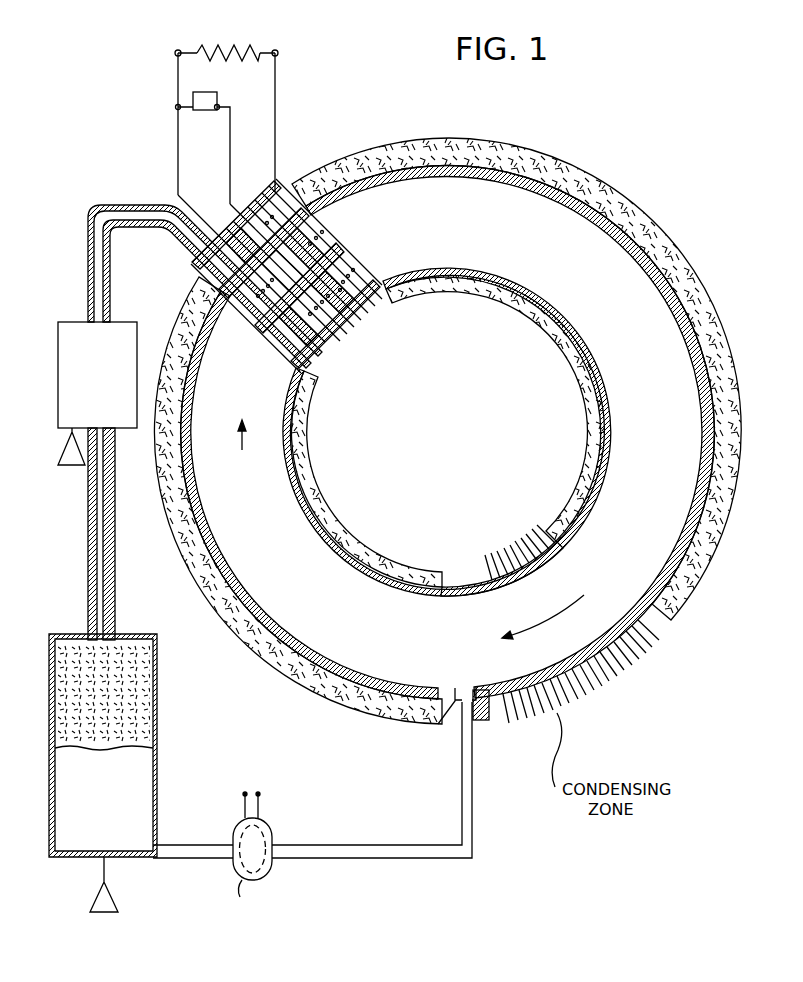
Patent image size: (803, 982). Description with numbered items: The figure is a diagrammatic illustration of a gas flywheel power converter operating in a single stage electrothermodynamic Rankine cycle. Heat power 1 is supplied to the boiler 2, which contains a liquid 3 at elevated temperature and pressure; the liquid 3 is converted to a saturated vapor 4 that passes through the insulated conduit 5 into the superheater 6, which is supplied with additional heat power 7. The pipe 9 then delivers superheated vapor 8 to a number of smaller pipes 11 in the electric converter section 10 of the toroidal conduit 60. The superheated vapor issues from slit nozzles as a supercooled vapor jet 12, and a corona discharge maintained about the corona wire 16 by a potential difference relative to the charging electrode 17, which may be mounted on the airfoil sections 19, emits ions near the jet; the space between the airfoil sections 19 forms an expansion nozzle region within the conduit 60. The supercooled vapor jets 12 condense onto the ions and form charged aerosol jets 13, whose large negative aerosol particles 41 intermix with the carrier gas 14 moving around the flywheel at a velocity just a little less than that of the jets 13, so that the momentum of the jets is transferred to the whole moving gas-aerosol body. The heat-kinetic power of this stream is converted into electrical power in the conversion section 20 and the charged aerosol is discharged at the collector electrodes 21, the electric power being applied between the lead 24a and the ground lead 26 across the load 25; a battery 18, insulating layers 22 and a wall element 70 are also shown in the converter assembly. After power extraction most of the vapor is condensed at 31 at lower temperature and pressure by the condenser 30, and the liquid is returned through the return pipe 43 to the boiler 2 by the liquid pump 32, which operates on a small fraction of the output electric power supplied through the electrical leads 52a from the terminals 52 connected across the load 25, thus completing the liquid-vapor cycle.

The heat power 1 is at (115, 905).
The boiler 2 is at (49, 825).
The liquid 3 is at (97, 792).
The saturated vapor 4 is at (101, 529).
The insulated conduit 5 is at (90, 551).
The superheater 6 is at (97, 375).
The additional heat power 7 is at (66, 468).
The superheated vapor 8 is at (90, 283).
The pipe 9 is at (110, 251).
The electric converter section 10 is at (265, 319).
The smaller pipes 11 is at (282, 311).
The supercooled vapor jet 12 is at (265, 298).
The charged aerosol jet 13 is at (303, 334).
The carrier gas 14 is at (587, 590).
The corona wire 16 is at (333, 349).
The charging electrode 17 is at (250, 233).
The battery 18 is at (200, 92).
The airfoil sections 19 is at (304, 232).
The conversion section 20 is at (333, 278).
The collector electrodes 21 is at (322, 266).
The insulating layer 22 is at (310, 240).
The lead 24a is at (276, 120).
The load 25 is at (238, 64).
The ground lead 26 is at (178, 97).
The condenser 30 is at (622, 650).
The condensation point 31 is at (483, 723).
The liquid pump 32 is at (233, 872).
The negative aerosol particles 41 is at (482, 552).
The return pipe 43 is at (473, 820).
The terminals 52 is at (277, 54).
The electrical leads 52a is at (248, 787).
The conduit 60 is at (473, 175).
The wall element 70 is at (287, 205).